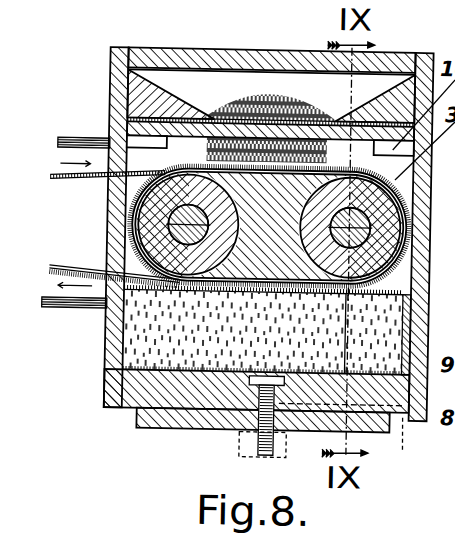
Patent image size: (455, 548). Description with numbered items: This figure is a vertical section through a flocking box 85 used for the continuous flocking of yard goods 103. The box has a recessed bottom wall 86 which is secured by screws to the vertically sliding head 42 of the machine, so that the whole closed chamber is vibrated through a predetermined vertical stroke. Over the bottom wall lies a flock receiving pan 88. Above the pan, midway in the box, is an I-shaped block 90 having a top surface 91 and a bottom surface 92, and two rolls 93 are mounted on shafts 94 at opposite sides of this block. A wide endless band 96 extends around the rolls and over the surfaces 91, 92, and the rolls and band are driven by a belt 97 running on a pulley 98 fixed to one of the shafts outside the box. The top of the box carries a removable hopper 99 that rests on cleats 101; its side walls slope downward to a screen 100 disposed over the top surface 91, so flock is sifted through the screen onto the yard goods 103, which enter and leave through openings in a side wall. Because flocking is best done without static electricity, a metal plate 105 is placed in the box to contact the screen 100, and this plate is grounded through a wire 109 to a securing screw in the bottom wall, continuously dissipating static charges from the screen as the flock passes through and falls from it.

The head 42 is at (234, 427).
The flocking box 85 is at (225, 390).
The recessed bottom wall 86 is at (224, 432).
The flock receiving pan 88 is at (232, 331).
The I-shaped block 90 is at (223, 225).
The top surface 91 is at (271, 77).
The bottom surface 92 is at (261, 385).
The roll 93 is at (232, 225).
The shaft 94 is at (260, 302).
The endless band 96 is at (235, 226).
The belt 97 is at (63, 219).
The pulley 98 is at (445, 325).
The removable hopper 99 is at (271, 73).
The screen 100 is at (271, 90).
The cleat 101 is at (237, 119).
The yard goods 103 is at (95, 214).
The metal plate 105 is at (424, 54).
The wire 109 is at (410, 446).